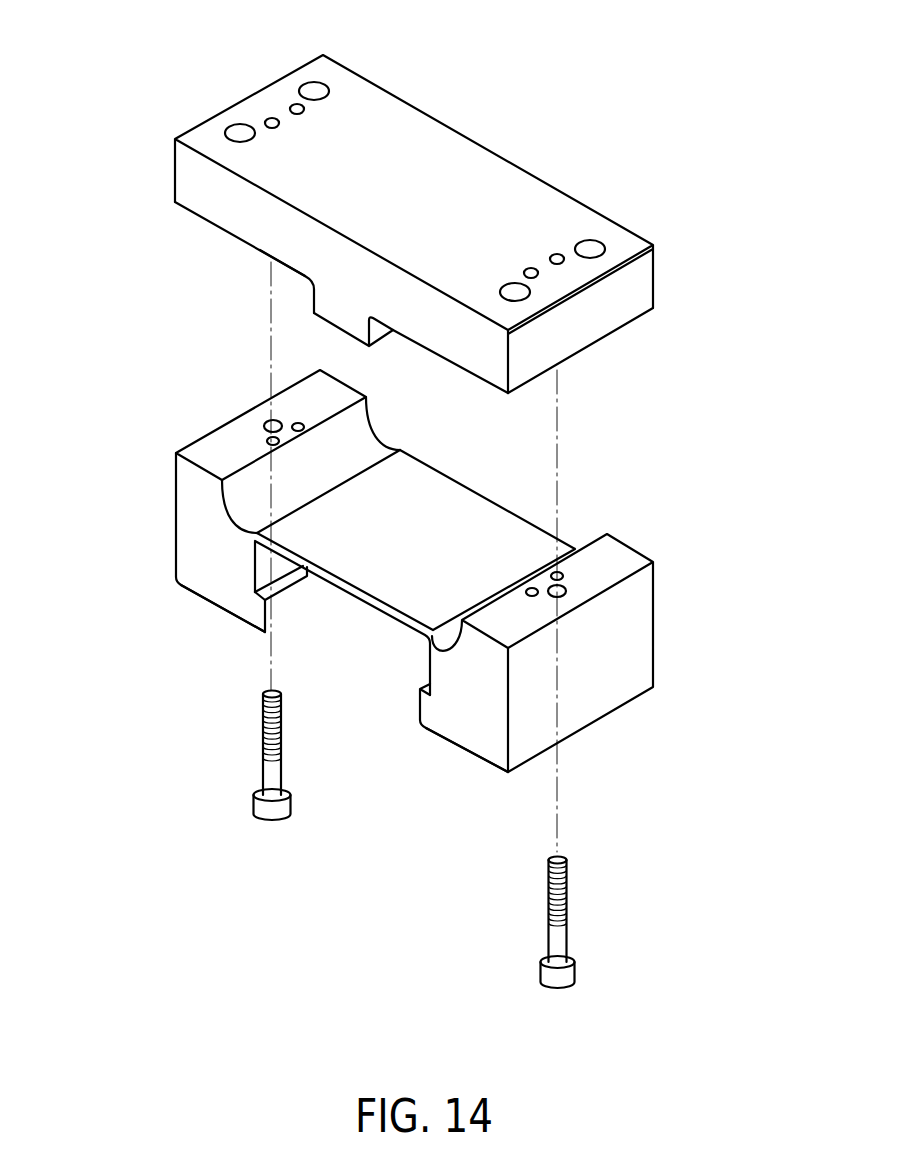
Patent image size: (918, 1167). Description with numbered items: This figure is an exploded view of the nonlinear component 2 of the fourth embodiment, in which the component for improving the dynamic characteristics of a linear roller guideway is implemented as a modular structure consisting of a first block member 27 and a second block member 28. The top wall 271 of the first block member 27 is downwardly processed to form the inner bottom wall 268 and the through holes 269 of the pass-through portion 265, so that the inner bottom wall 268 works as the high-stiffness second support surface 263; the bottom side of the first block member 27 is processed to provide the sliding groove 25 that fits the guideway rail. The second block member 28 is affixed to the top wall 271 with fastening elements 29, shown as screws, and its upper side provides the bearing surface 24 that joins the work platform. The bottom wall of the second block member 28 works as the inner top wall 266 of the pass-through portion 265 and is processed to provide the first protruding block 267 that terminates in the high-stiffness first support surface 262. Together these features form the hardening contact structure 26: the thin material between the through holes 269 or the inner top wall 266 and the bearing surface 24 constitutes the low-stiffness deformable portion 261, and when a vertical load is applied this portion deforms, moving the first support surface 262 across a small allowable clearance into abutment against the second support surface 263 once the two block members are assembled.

The nonlinear component 2 is at (680, 623).
The bearing surface 24 is at (410, 144).
The sliding groove 25 is at (402, 670).
The hardening contact structure 26 is at (560, 426).
The first block member 27 is at (196, 545).
The second block member 28 is at (207, 186).
The fastening elements 29 is at (570, 938).
The low-stiffness deformable portion 261 is at (427, 323).
The high-stiffness first support surface 262 is at (335, 327).
The high-stiffness second support surface 263 is at (347, 562).
The pass-through portion 265 is at (540, 527).
The inner top wall 266 is at (455, 370).
The first protruding block 267 is at (325, 307).
The inner bottom wall 268 is at (310, 542).
The through holes 269 is at (237, 507).
The top wall 271 is at (212, 450).